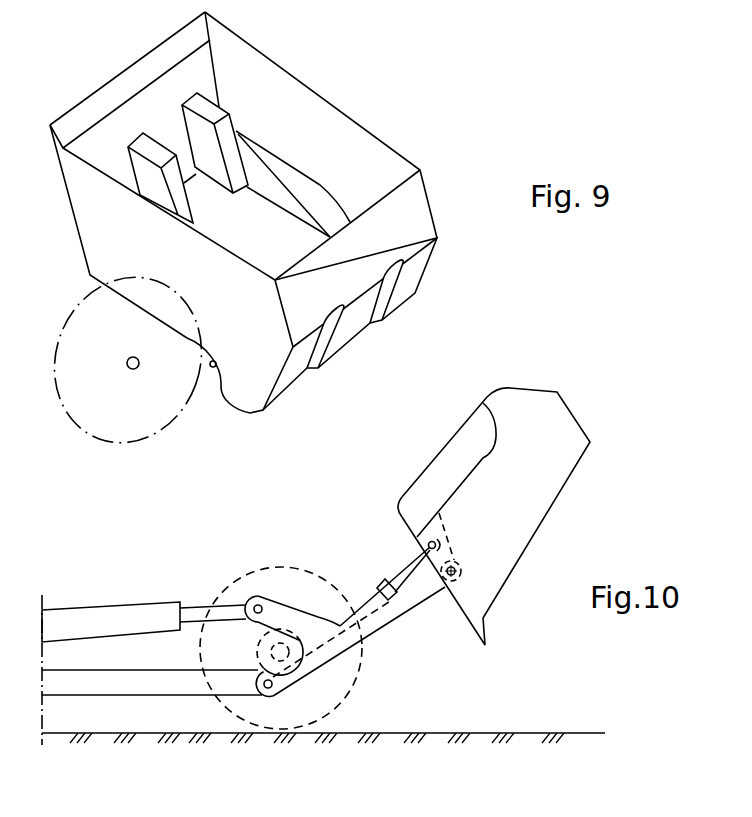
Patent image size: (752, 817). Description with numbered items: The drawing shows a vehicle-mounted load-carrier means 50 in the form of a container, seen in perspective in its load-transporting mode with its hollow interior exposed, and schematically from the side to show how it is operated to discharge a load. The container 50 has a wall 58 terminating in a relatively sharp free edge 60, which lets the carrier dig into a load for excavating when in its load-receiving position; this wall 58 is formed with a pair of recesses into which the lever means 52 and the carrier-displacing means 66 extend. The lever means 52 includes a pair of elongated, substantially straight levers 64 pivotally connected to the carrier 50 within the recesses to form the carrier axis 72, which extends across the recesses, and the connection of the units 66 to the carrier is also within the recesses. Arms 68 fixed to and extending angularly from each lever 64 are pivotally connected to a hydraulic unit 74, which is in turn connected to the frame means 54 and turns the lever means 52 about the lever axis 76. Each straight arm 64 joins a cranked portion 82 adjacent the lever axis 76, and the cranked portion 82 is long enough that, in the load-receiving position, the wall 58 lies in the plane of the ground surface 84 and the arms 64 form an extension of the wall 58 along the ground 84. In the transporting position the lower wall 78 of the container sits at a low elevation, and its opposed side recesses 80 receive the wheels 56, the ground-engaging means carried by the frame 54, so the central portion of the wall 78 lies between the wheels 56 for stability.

In FIG. 9, the load-carrier means 50 is at (362, 115).
In FIG. 10, the load-carrier means 50 is at (583, 416).
In FIG. 10, the lever means 52 is at (394, 642).
In FIG. 10, the frame means 54 is at (137, 675).
In FIG. 9, the wheels 56 is at (197, 420).
In FIG. 10, the wheels 56 is at (274, 567).
In FIG. 9, the wall 58 is at (200, 67).
In FIG. 10, the wall 58 is at (470, 626).
In FIG. 9, the free edge 60 is at (135, 77).
In FIG. 10, the elongated levers 64 is at (425, 603).
In FIG. 10, the carrier-displacing means 66 is at (378, 590).
In FIG. 10, the arms 68 is at (287, 612).
In FIG. 10, the carrier axis 72 is at (458, 567).
In FIG. 10, the hydraulic unit 74 is at (128, 610).
In FIG. 10, the lever axis 76 is at (265, 692).
In FIG. 9, the lower wall 78 is at (267, 242).
In FIG. 9, the side recesses 80 is at (217, 364).
In FIG. 10, the cranked portion 82 is at (287, 696).
In FIG. 10, the ground surface 84 is at (556, 731).